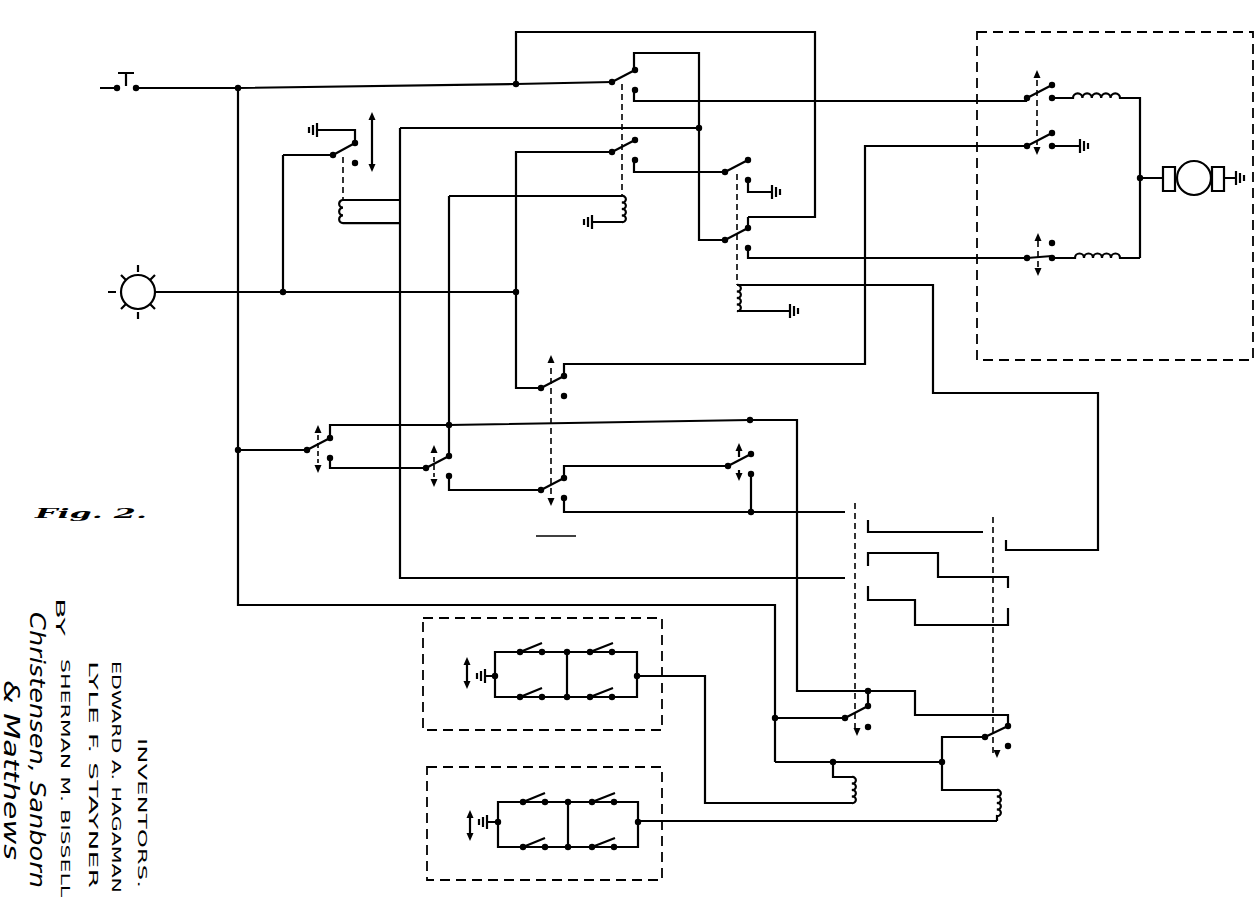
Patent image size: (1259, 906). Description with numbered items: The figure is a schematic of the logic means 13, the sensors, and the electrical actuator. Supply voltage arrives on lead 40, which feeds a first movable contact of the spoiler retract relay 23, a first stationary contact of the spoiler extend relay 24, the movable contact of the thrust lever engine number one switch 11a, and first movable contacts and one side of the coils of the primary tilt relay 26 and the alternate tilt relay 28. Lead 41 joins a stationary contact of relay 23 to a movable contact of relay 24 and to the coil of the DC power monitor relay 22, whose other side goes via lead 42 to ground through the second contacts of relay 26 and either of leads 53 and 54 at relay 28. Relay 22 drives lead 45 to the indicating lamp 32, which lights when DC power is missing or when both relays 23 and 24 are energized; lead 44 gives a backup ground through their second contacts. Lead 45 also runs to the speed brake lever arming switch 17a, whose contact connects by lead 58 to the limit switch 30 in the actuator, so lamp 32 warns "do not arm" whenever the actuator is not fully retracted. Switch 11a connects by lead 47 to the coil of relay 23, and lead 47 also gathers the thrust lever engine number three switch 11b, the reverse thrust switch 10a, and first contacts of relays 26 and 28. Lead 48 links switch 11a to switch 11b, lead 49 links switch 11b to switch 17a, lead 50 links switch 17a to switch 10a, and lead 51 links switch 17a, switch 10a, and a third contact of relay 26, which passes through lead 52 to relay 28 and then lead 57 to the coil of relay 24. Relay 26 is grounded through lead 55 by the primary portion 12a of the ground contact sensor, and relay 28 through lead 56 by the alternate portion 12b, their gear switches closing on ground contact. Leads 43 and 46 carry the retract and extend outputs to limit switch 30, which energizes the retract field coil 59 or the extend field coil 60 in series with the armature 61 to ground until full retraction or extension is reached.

The lead 40 is at (317, 86).
The lead 41 is at (443, 130).
The lead 42 is at (397, 355).
The lead 43 is at (917, 100).
The lead 44 is at (705, 166).
The lead 45 is at (283, 208).
The lead 46 is at (945, 260).
The lead 47 is at (373, 425).
The lead 48 is at (383, 469).
The lead 49 is at (515, 491).
The lead 50 is at (651, 468).
The lead 51 is at (651, 510).
The lead 52 is at (953, 530).
The lead 53 is at (942, 556).
The lead 54 is at (897, 603).
The lead 55 is at (783, 805).
The lead 56 is at (735, 822).
The lead 57 is at (1071, 550).
The lead 58 is at (943, 148).
The retract field coil 59 is at (1112, 90).
The extend field coil 60 is at (1122, 264).
The armature 61 is at (1186, 157).
The limit switch 30 is at (1082, 332).
The indicating lamp 32 is at (114, 307).
The DC power monitor relay 22 is at (348, 188).
The spoiler retract relay 23 is at (615, 179).
The spoiler extend relay 24 is at (738, 256).
The primary tilt relay 26 is at (858, 854).
The alternate tilt relay 28 is at (1003, 852).
The thrust lever engine No. 1 switch 11a is at (315, 491).
The thrust lever engine No. 3 switch 11b is at (461, 505).
The speed brake lever arming switch 17a is at (586, 458).
The reverse thrust switch 10a is at (728, 503).
The primary portion of ground contact sensor 12a is at (423, 672).
The alternate portion of ground contact sensor 12b is at (427, 839).
The logic means 13 is at (330, 764).